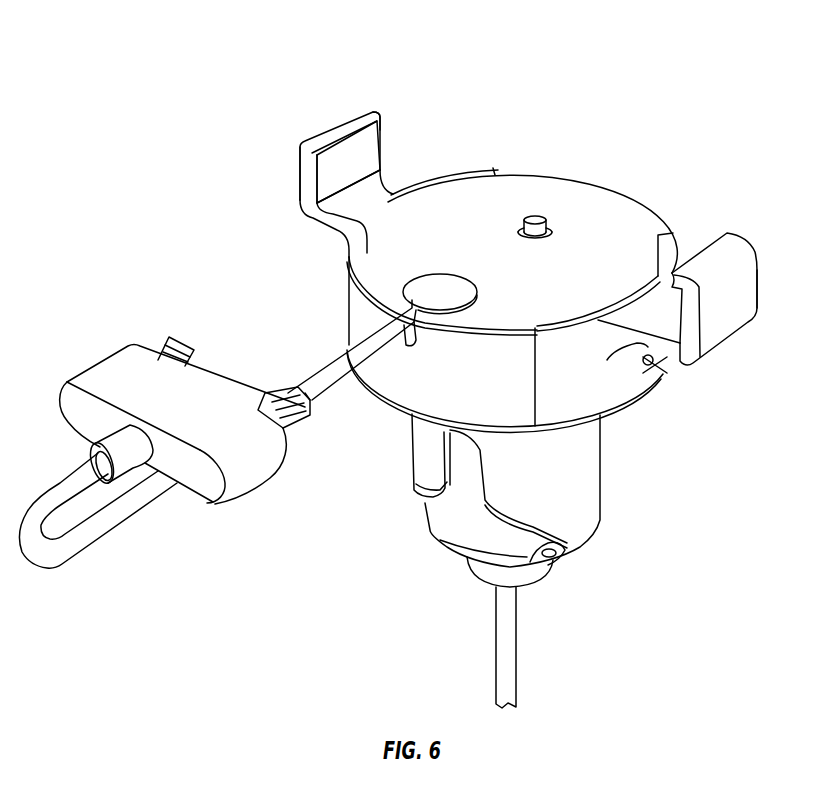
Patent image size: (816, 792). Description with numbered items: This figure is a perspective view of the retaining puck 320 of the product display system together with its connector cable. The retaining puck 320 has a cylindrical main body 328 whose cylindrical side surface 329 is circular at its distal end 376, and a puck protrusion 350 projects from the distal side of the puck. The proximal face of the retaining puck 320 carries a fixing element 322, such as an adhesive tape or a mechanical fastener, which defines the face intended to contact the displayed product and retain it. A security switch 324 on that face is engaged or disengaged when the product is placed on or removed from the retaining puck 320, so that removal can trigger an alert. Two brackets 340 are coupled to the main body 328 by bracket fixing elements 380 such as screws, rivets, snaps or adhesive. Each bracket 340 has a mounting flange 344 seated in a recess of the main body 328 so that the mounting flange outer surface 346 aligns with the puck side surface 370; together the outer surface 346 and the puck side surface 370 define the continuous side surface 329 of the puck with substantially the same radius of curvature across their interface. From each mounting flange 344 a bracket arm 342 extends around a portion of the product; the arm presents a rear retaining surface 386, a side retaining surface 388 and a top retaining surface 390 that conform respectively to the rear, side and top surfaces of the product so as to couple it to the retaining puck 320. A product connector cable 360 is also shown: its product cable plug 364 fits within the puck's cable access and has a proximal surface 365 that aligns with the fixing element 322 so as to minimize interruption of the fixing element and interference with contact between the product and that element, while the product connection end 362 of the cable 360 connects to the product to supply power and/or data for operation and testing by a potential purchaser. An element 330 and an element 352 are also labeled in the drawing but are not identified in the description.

The retaining puck 320 is at (591, 82).
The fixing element 322 is at (632, 217).
The security switch 324 is at (533, 216).
The main body 328 is at (620, 377).
The side surface 329 is at (555, 400).
The shaft 330 is at (507, 643).
The bracket 340 is at (340, 120).
The bracket arm 342 is at (307, 172).
The mounting flange 344 is at (460, 172).
The mounting flange outer surface 346 is at (622, 413).
The puck protrusion 350 is at (573, 517).
The housing bottom 352 is at (440, 523).
The product connector cable 360 is at (102, 525).
The product connection end 362 is at (120, 370).
The product cable plug 364 is at (403, 297).
The proximal surface 365 is at (430, 287).
The puck side surface 370 is at (416, 466).
The distal end 376 is at (372, 390).
The bracket fixing element 380 is at (652, 366).
The rear retaining surface 386 is at (380, 187).
The side retaining surface 388 is at (343, 160).
The top retaining surface 390 is at (383, 130).